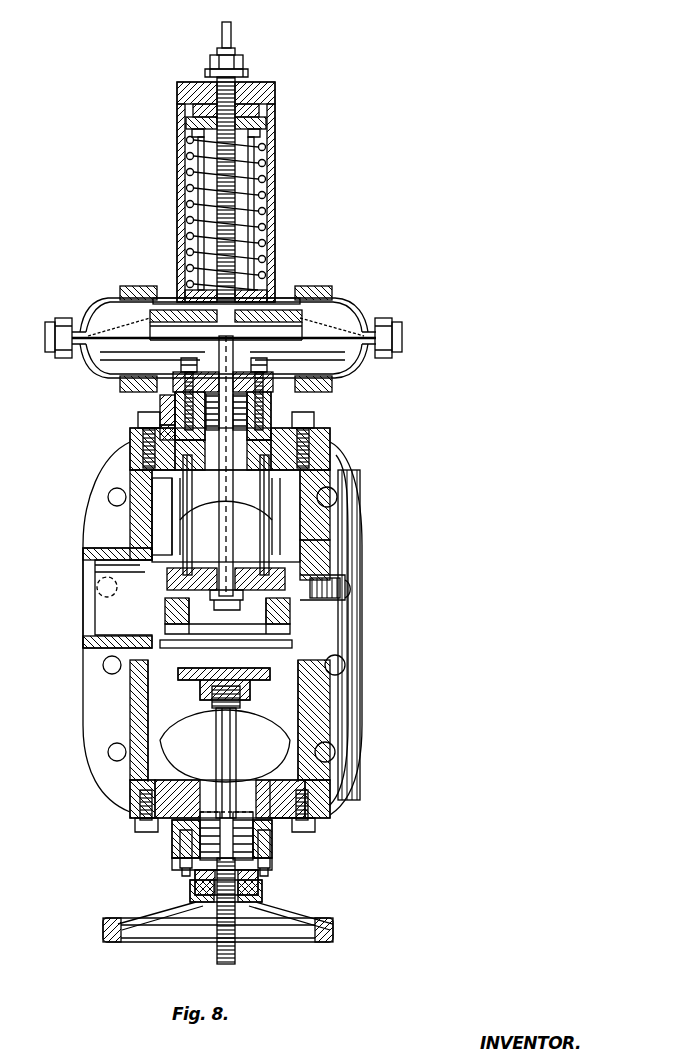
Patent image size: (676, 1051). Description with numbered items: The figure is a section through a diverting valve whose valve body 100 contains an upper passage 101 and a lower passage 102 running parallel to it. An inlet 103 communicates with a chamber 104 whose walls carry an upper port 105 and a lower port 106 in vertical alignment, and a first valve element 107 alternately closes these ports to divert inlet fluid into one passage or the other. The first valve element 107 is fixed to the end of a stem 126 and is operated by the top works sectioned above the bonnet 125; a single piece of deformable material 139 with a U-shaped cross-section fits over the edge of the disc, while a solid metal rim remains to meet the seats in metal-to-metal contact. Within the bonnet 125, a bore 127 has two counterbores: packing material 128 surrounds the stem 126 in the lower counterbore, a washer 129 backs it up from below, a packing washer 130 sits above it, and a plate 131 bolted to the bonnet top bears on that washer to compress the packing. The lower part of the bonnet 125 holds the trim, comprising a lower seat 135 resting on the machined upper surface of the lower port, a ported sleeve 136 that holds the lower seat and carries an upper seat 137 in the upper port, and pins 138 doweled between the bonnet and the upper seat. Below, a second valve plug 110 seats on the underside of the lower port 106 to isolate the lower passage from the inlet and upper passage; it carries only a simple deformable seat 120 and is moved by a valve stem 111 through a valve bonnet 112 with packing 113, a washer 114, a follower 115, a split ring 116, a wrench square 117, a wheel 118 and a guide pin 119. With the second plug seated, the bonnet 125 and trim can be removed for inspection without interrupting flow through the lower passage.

The valve body 100 is at (322, 465).
The upper passage 101 is at (277, 508).
The lower passage 102 is at (253, 732).
The inlet 103 is at (90, 598).
The chamber 104 is at (300, 562).
The upper port 105 is at (248, 552).
The lower port 106 is at (243, 636).
The first valve element 107 is at (268, 594).
The second valve plug 110 is at (244, 693).
The valve stem 111 is at (232, 757).
The valve bonnet 112 is at (270, 862).
The packing 113 is at (280, 838).
The washer 114 is at (307, 820).
The follower 115 is at (273, 853).
The split ring 116 is at (177, 862).
The wrench square 117 is at (207, 873).
The wheel 118 is at (334, 929).
The guide pin 119 is at (214, 815).
The deformable seat 120 is at (202, 668).
The bonnet 125 is at (276, 409).
The stem 126 is at (236, 356).
The bore 127 is at (162, 432).
The packing material 128 is at (176, 424).
The washer 129 is at (256, 426).
The packing washer 130 is at (266, 400).
The plate 131 is at (210, 364).
The lower seat 135 is at (167, 603).
The ported sleeve 136 is at (167, 580).
The upper seat 137 is at (167, 537).
The pins 138 is at (177, 497).
The deformable material 139 is at (252, 592).